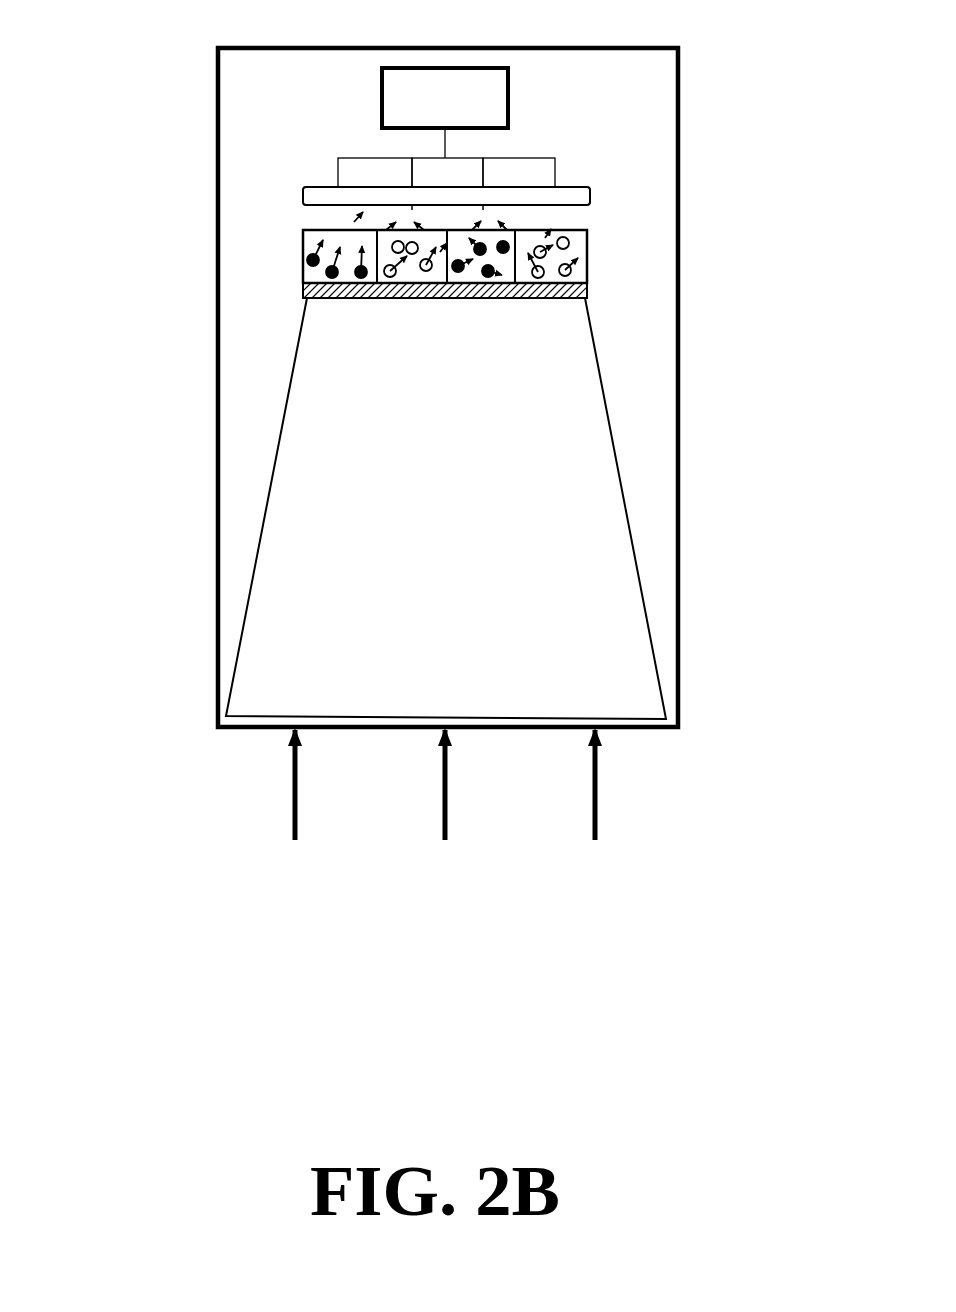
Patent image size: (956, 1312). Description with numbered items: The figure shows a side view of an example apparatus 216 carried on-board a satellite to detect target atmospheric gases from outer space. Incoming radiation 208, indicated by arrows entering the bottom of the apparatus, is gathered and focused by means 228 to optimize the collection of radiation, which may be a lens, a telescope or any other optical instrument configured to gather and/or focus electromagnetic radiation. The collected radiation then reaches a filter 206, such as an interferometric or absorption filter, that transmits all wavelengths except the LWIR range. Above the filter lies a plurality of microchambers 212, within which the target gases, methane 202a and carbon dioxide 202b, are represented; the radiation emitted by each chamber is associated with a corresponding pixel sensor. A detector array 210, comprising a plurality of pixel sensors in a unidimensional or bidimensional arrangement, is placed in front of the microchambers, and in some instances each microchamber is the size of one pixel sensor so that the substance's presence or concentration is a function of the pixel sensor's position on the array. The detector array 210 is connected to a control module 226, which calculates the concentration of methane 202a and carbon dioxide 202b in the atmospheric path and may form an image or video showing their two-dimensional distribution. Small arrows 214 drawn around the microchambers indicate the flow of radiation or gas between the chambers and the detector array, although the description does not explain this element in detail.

The apparatus 216 is at (215, 193).
The control module 226 is at (445, 113).
The detector array 210 is at (300, 193).
The microchambers 212 is at (297, 235).
The methane 202a is at (583, 267).
The carbon dioxide 202b is at (583, 303).
The particle flow arrows 214 is at (577, 223).
The filter 206 is at (300, 290).
The means to optimize the collection of radiation 228 is at (446, 508).
The radiation 208 is at (603, 797).